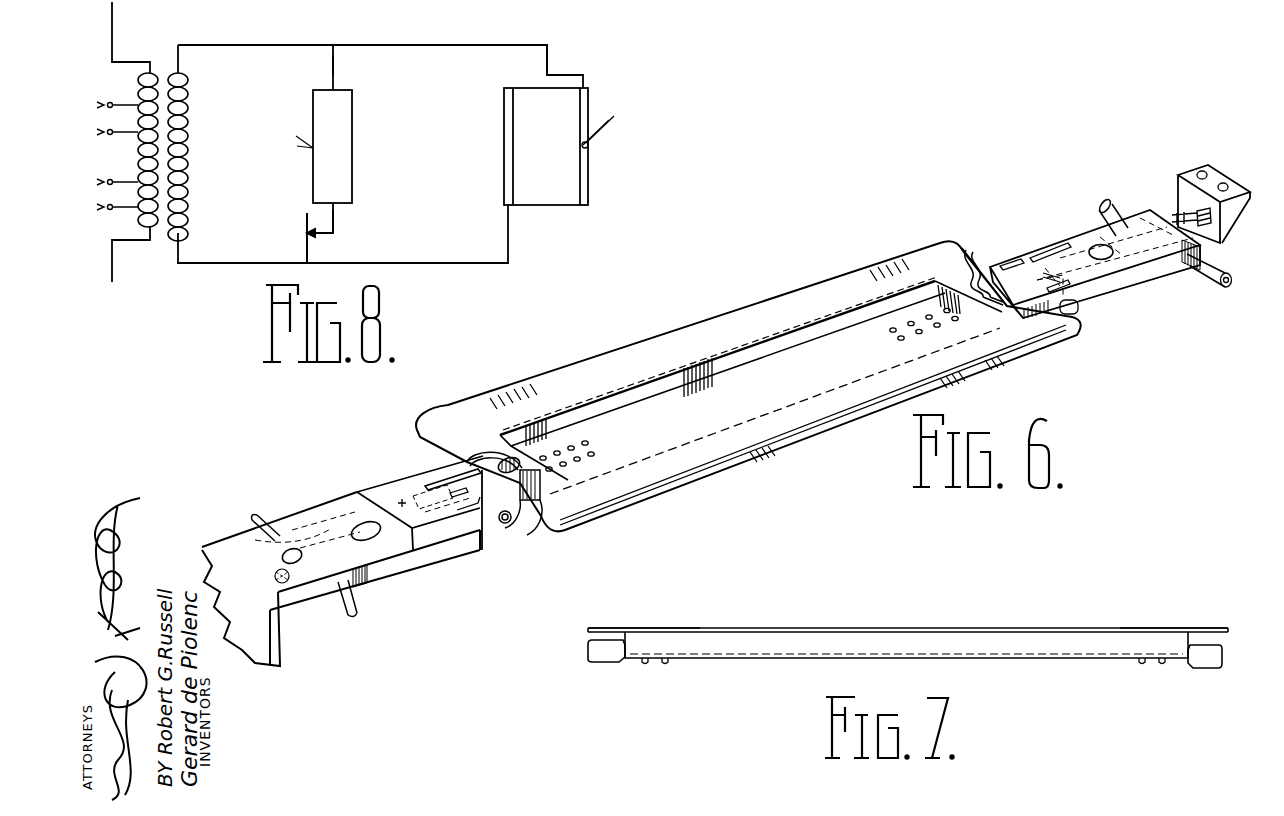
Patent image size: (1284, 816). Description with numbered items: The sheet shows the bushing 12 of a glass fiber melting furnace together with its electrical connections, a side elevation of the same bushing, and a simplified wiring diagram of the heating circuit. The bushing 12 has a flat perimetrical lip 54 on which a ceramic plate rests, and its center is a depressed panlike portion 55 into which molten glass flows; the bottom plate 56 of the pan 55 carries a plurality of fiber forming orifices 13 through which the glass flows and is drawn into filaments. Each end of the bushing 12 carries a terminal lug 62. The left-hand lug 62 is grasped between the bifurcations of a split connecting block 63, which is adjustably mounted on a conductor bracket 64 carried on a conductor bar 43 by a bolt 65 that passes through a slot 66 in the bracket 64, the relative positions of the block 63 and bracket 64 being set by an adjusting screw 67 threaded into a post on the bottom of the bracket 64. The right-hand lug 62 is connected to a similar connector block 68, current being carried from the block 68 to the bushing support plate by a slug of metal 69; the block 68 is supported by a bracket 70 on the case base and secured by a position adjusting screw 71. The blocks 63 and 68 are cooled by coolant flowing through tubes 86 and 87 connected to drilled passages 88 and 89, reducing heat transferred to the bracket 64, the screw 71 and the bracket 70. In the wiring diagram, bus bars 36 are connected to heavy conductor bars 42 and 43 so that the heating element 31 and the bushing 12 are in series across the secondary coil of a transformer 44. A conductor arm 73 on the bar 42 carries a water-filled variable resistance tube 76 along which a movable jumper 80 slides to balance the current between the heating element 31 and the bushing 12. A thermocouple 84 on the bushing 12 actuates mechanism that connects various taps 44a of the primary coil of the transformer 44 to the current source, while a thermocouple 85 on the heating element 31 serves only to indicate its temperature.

In FIG. 8, the bushing 12 is at (352, 143).
In FIG. 6, the bushing 12 is at (776, 454).
In FIG. 7, the bushing 12 is at (922, 620).
In FIG. 6, the fiber forming orifices 13 is at (645, 478).
In FIG. 7, the fiber forming orifices 13 is at (666, 663).
In FIG. 8, the heating element 31 is at (533, 206).
In FIG. 8, the bus bars 36 is at (504, 140).
In FIG. 8, the conductor bar 42 is at (449, 262).
In FIG. 8, the conductor bar 43 is at (447, 46).
In FIG. 8, the transformer 44 is at (190, 157).
In FIG. 8, the taps 44a is at (105, 130).
In FIG. 6, the flat perimetrical lip 54 is at (819, 418).
In FIG. 7, the flat perimetrical lip 54 is at (607, 627).
In FIG. 6, the depressed panlike portion 55 is at (856, 322).
In FIG. 6, the bottom plate 56 is at (766, 372).
In FIG. 7, the bottom plate 56 is at (767, 659).
In FIG. 6, the terminal lug 62 is at (528, 525).
In FIG. 7, the terminal lug 62 is at (600, 665).
In FIG. 6, the split connecting block 63 is at (445, 481).
In FIG. 8, the conductor bracket 64 is at (340, 66).
In FIG. 6, the conductor bracket 64 is at (305, 592).
In FIG. 6, the bolt 65 is at (388, 571).
In FIG. 6, the slot 66 is at (348, 537).
In FIG. 6, the adjusting screw 67 is at (312, 585).
In FIG. 6, the connector block 68 is at (255, 540).
In FIG. 6, the slug of metal 69 is at (1103, 244).
In FIG. 6, the bracket 70 is at (1230, 230).
In FIG. 6, the position adjusting screw 71 is at (1195, 216).
In FIG. 8, the conductor arm 73 is at (340, 227).
In FIG. 8, the variable resistance tube 76 is at (307, 230).
In FIG. 8, the movable jumper 80 is at (311, 238).
In FIG. 8, the thermocouple 84 is at (313, 148).
In FIG. 8, the thermocouple 85 is at (588, 148).
In FIG. 6, the tubes 86 is at (297, 525).
In FIG. 6, the tubes 87 is at (1218, 280).
In FIG. 6, the drilled passages 88 is at (402, 496).
In FIG. 6, the drilled passages 89 is at (1069, 253).